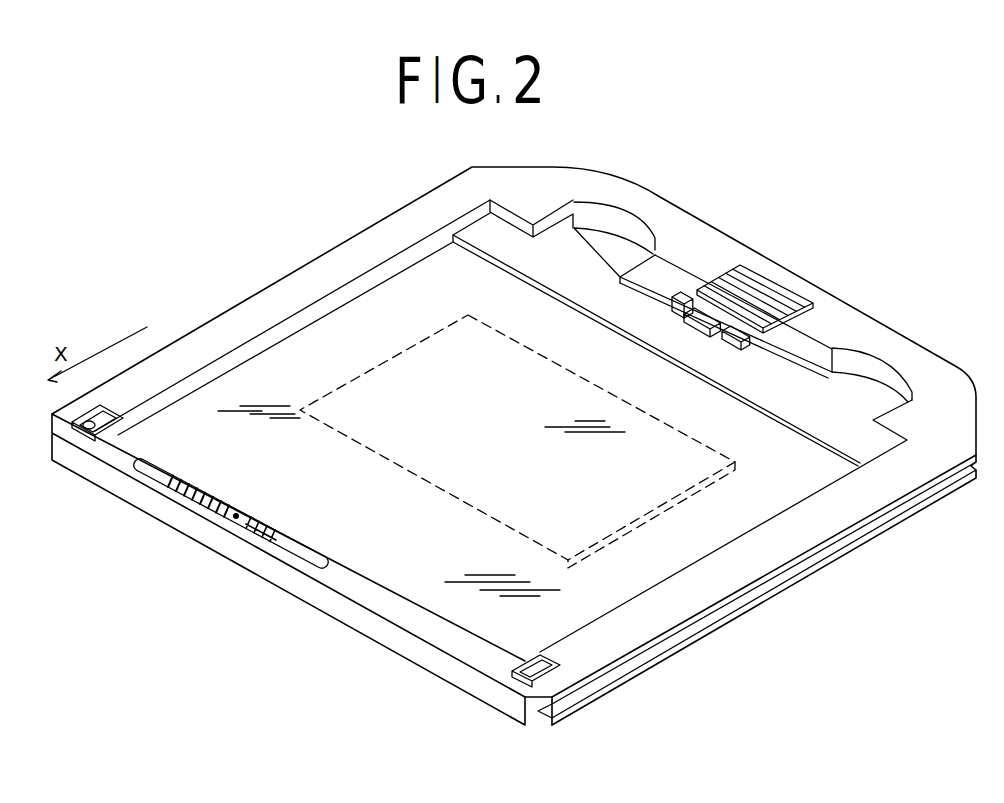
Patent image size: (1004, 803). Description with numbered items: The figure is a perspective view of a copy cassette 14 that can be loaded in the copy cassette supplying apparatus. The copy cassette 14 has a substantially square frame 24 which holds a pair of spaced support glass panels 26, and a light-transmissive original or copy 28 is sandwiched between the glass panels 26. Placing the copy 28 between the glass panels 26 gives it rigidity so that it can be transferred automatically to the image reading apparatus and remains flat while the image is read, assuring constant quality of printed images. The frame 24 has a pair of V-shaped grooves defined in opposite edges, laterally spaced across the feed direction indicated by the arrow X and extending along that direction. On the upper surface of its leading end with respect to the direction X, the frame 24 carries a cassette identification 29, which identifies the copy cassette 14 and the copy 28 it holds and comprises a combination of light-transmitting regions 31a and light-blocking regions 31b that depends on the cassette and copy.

The copy cassette 14 is at (226, 578).
The frame 24 is at (700, 246).
The support glass panels 26 is at (356, 322).
The copy 28 is at (465, 452).
The cassette identification 29 is at (138, 472).
The light-transmitting regions 31a is at (213, 489).
The light-blocking regions 31b is at (282, 533).